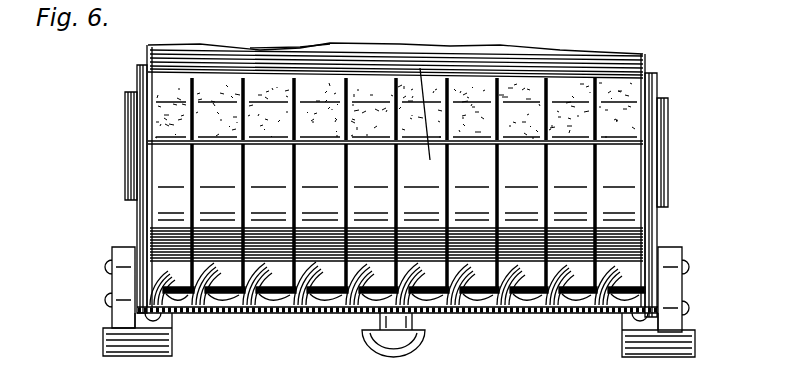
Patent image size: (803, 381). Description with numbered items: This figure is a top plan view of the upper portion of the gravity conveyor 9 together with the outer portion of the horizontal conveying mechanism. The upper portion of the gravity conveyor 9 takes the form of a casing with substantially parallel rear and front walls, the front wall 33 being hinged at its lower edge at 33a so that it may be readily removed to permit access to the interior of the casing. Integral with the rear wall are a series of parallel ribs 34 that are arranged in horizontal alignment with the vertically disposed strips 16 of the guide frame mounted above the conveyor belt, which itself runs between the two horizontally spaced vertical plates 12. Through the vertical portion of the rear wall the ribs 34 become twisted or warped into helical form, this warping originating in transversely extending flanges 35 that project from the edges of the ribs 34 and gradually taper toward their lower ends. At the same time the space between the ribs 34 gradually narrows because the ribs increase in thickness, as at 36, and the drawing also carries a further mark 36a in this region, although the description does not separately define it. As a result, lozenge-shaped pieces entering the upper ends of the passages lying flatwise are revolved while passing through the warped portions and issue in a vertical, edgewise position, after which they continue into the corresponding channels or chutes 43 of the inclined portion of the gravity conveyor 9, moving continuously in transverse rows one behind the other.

The gravity conveyor 9 is at (478, 52).
The channels or individual chutes 43 is at (431, 0).
The strips 16 is at (593, 92).
The partition wall 36a is at (430, 160).
The ribs 34 is at (347, 182).
The flanges 35 is at (317, 303).
The front wall 33 is at (460, 314).
The hinge 33a is at (143, 357).
The thickened rib portion 36 is at (657, 230).
The vertical plates 12 is at (666, 171).